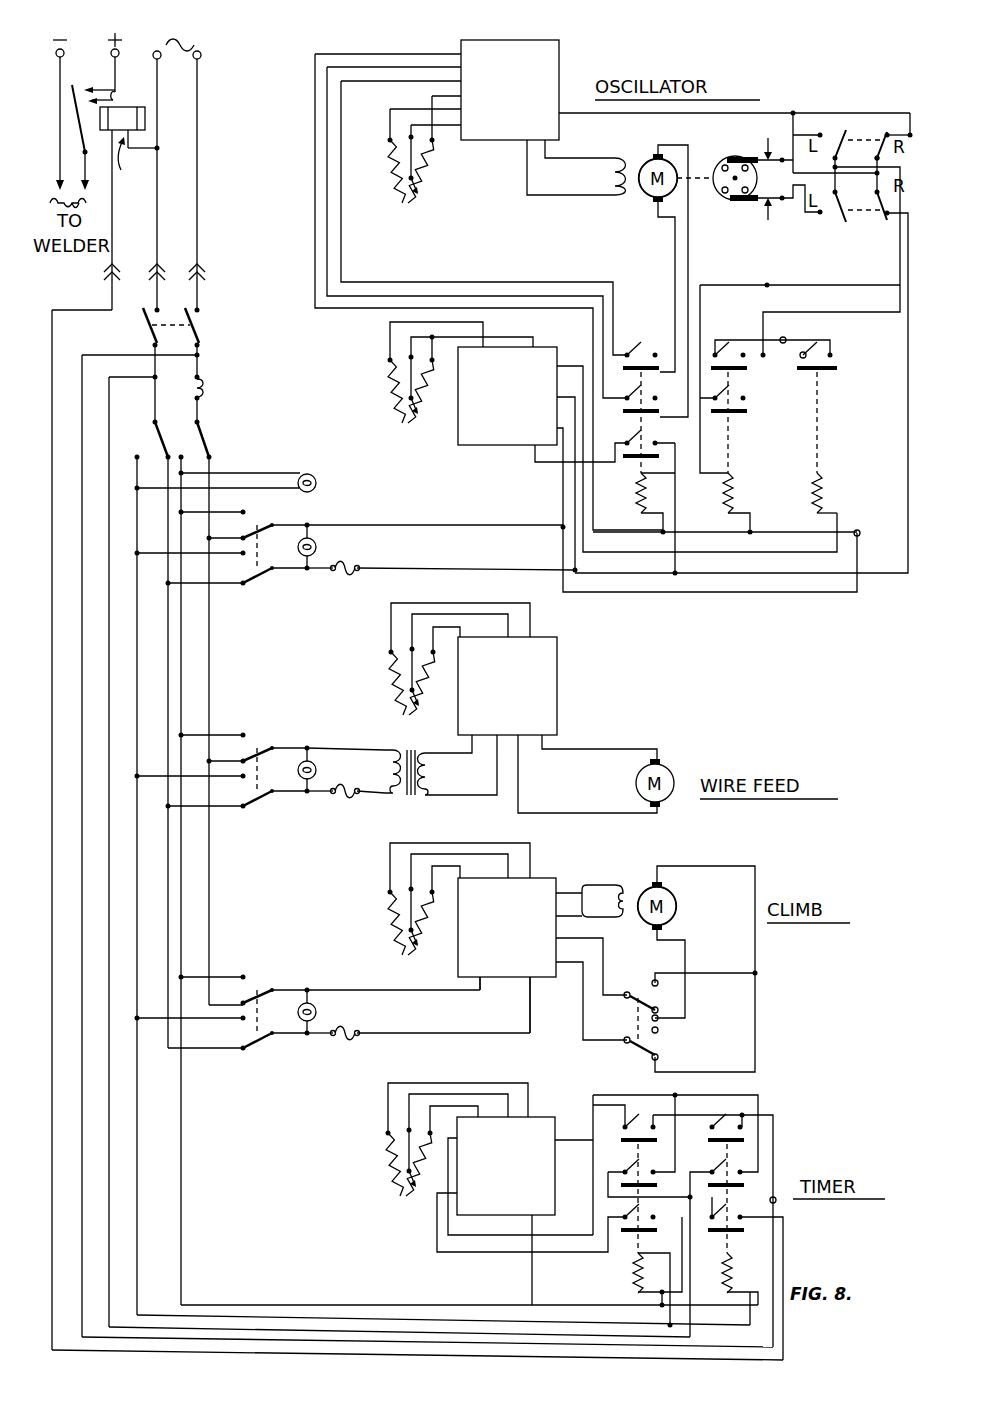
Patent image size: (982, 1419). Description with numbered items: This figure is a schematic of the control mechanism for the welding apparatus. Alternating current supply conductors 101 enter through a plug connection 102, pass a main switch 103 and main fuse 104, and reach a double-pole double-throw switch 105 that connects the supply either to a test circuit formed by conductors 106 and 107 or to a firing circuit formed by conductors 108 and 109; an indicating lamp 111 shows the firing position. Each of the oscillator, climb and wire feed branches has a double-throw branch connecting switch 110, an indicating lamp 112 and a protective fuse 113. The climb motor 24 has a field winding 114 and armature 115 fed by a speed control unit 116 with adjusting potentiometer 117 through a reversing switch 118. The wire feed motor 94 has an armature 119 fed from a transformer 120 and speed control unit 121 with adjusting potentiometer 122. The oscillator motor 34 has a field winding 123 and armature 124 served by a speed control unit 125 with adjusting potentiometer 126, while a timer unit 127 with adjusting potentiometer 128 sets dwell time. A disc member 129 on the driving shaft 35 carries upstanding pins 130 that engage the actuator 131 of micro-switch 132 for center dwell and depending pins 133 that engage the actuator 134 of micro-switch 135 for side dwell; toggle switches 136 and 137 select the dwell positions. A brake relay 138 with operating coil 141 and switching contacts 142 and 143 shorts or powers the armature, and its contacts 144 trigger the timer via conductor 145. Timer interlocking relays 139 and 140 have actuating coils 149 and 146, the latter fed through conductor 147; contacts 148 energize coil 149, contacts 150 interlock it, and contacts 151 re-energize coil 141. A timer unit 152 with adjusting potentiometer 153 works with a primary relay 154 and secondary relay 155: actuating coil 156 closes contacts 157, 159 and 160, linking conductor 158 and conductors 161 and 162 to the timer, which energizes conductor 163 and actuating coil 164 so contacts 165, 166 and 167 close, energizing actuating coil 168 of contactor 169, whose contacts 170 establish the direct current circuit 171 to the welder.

The climb motor 24 is at (678, 896).
The oscillator motor 34 is at (641, 161).
The driving shaft 35 is at (722, 196).
The wire feed motor 94 is at (669, 756).
The alternating current supply conductors 101 is at (160, 84).
The plug connection 102 is at (199, 268).
The main switch 103 is at (200, 338).
The main fuse 104 is at (204, 391).
The double-pole double-throw switch 105 is at (203, 431).
The conductor 106 is at (168, 613).
The conductor 107 is at (209, 642).
The conductor 108 is at (138, 669).
The conductor 109 is at (181, 696).
The double-throw branch connecting switch 110 is at (260, 523).
The indicating lamp 111 is at (326, 452).
The indicating lamp 112 is at (318, 546).
The protective fuse 113 is at (343, 578).
The field winding 114 is at (624, 884).
The armature 115 is at (654, 866).
The speed control unit 116 is at (541, 876).
The adjusting potentiometer 117 is at (388, 915).
The reversing switch 118 is at (640, 990).
The armature 119 is at (636, 785).
The transformer 120 is at (410, 797).
The speed control unit 121 is at (556, 720).
The adjusting potentiometer 122 is at (388, 680).
The field winding 123 is at (612, 180).
The armature 124 is at (645, 196).
The speed control unit 125 is at (559, 63).
The adjusting potentiometer 126 is at (390, 190).
The timer unit 127 is at (497, 436).
The adjusting potentiometer 128 is at (395, 412).
The disc member 129 is at (718, 162).
The upstanding pins 130 is at (737, 240).
The actuator 131 is at (728, 205).
The micro-switch 132 is at (770, 224).
The depending pins 133 is at (770, 132).
The actuator 134 is at (735, 142).
The micro-switch 135 is at (845, 126).
The toggle switch 136 is at (858, 137).
The toggle switch 137 is at (863, 222).
The brake relay 138 is at (655, 378).
The timer interlocking relay 139 is at (765, 378).
The timer interlocking relay 140 is at (844, 391).
The operating coil 141 is at (637, 500).
The switching contacts 142 is at (643, 350).
The switching contacts 143 is at (642, 397).
The contacts 144 is at (643, 441).
The conductor 145 is at (533, 466).
The actuating coil 146 is at (812, 489).
The conductor 147 is at (758, 557).
The contacts 148 is at (829, 338).
The actuating coil 149 is at (728, 494).
The contacts 150 is at (735, 353).
The contacts 151 is at (752, 405).
The timer unit 152 is at (548, 1112).
The adjusting potentiometer 153 is at (386, 1178).
The primary relay 154 is at (630, 1092).
The secondary relay 155 is at (697, 1171).
The actuating coil 156 is at (636, 1273).
The contacts 157 is at (623, 1221).
The conductor 158 is at (437, 1242).
The contacts 159 is at (623, 1178).
The contacts 160 is at (624, 1134).
The conductor 161 is at (82, 1199).
The conductor 162 is at (109, 1170).
The conductor 163 is at (532, 1281).
The actuating coil 164 is at (735, 1285).
The contacts 165 is at (777, 1183).
The contacts 166 is at (745, 1134).
The contacts 167 is at (744, 1222).
The actuating coil 168 is at (126, 120).
The contactor 169 is at (135, 166).
The contacts 170 is at (118, 86).
The direct current circuit 171 is at (80, 72).